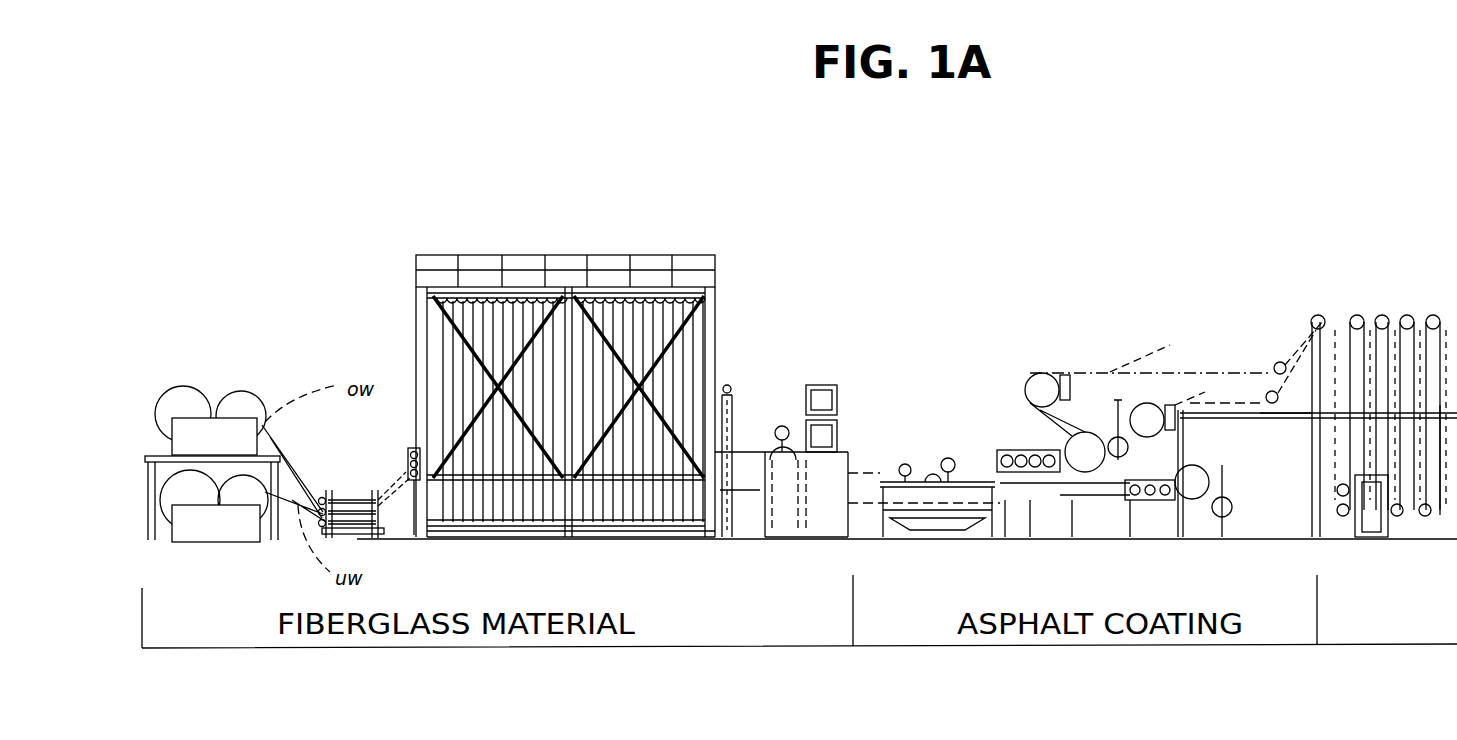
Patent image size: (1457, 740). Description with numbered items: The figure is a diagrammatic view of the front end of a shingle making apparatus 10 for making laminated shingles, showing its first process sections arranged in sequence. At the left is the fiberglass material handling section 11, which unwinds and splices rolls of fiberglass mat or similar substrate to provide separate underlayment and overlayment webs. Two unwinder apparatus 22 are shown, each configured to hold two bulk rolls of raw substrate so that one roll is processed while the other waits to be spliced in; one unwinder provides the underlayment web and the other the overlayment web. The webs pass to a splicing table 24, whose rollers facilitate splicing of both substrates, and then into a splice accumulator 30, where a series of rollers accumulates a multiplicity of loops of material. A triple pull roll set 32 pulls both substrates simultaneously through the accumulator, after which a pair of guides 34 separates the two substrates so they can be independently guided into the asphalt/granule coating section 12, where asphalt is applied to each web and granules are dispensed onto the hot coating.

The shingle making apparatus 10 is at (1148, 213).
The fiberglass material handling section 11 is at (744, 293).
The asphalt/granule coating section 12 is at (1192, 312).
The unwinder apparatus 22 is at (214, 410).
The splicing table 24 is at (343, 492).
The splice accumulator 30 is at (419, 330).
The triple pull roll set 32 is at (782, 421).
The guides 34 is at (850, 421).